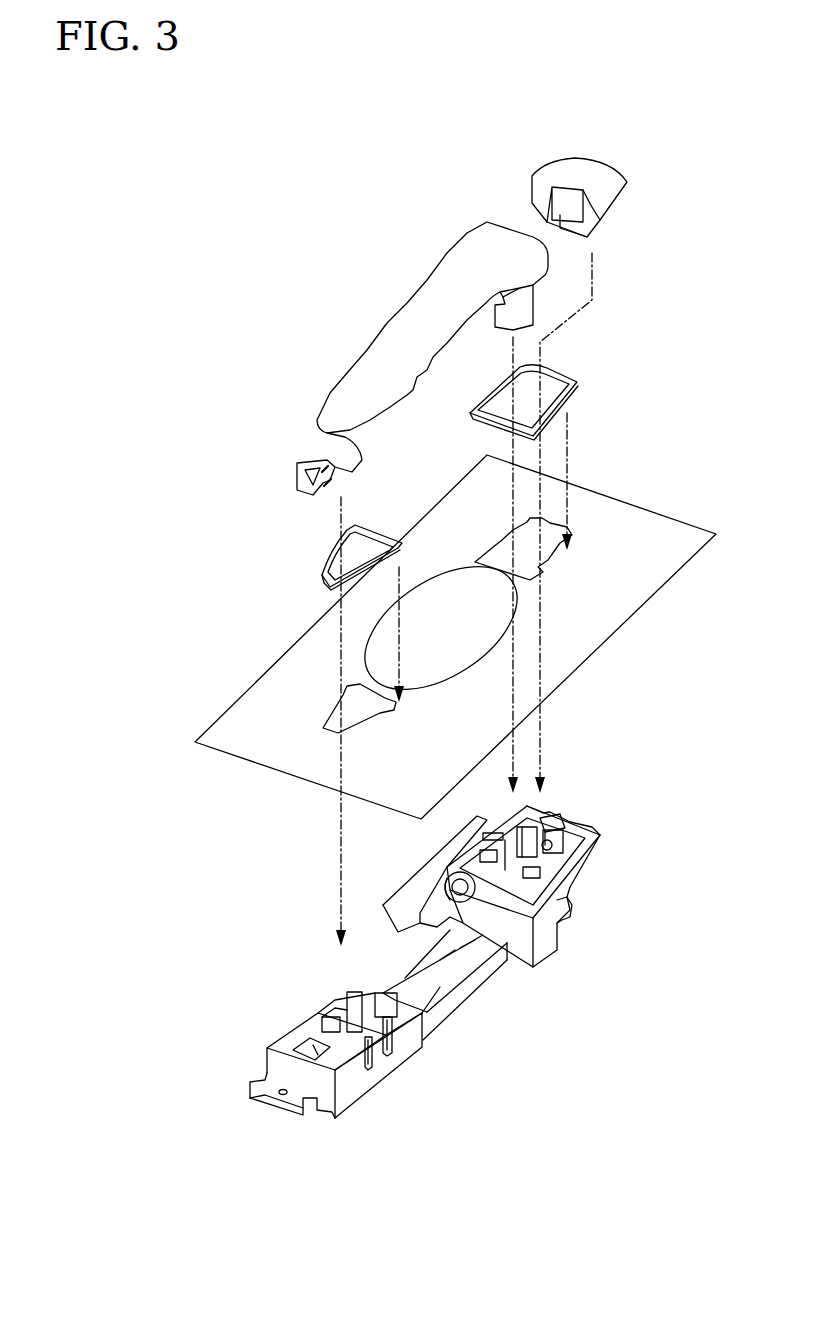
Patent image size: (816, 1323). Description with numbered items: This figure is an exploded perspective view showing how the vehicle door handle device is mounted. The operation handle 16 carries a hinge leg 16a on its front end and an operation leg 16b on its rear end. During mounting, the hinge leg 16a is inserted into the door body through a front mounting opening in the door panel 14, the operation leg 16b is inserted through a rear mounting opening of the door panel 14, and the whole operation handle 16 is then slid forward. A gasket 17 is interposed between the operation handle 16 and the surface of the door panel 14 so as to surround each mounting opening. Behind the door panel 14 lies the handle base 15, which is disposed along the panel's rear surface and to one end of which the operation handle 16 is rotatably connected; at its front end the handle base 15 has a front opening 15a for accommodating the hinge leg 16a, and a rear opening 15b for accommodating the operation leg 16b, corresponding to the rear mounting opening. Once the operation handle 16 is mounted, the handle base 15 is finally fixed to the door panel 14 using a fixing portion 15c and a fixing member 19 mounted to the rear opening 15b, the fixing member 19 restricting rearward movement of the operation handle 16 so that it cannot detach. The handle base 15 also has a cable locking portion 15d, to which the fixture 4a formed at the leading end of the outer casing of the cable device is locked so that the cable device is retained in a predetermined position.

The fixture 4a is at (355, 717).
The door panel 14 is at (548, 528).
The handle base 15 is at (590, 923).
The front opening 15a is at (360, 1017).
The rear opening 15b is at (560, 832).
The fixing portion 15c is at (297, 1113).
The cable locking portion 15d is at (567, 907).
The operation handle 16 is at (318, 371).
The hinge leg 16a is at (327, 446).
The operation leg 16b is at (533, 304).
The gasket 17 is at (573, 390).
The fixing member 19 is at (613, 190).